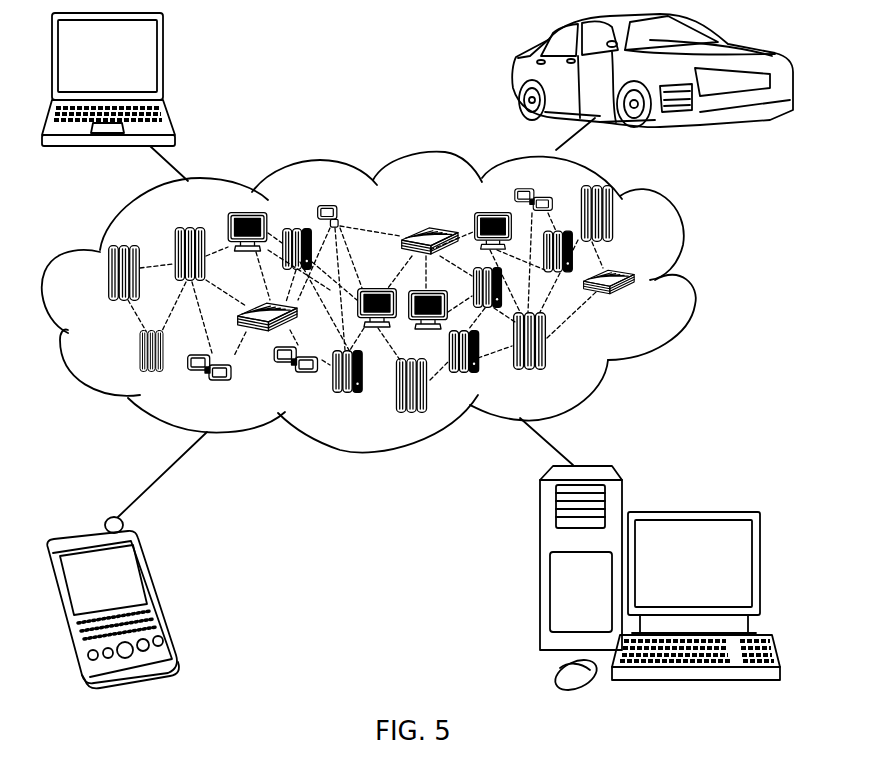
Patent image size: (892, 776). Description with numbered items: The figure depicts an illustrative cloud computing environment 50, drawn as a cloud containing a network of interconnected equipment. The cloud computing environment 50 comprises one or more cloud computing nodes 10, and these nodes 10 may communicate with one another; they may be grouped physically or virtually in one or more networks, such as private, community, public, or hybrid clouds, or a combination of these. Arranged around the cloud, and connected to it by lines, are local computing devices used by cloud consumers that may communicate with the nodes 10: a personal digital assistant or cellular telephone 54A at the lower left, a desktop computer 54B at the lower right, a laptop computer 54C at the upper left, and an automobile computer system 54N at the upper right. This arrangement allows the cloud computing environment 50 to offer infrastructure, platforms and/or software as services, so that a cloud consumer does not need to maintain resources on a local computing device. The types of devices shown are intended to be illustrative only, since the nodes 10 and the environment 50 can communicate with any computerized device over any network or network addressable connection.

The laptop computer 54C is at (163, 60).
The automobile computer system 54N is at (520, 78).
The personal digital assistant (PDA) or cellular telephone 54A is at (155, 585).
The desktop computer 54B is at (690, 508).
The cloud computing environment 50 is at (692, 278).
The cloud computing node 10 is at (648, 304).